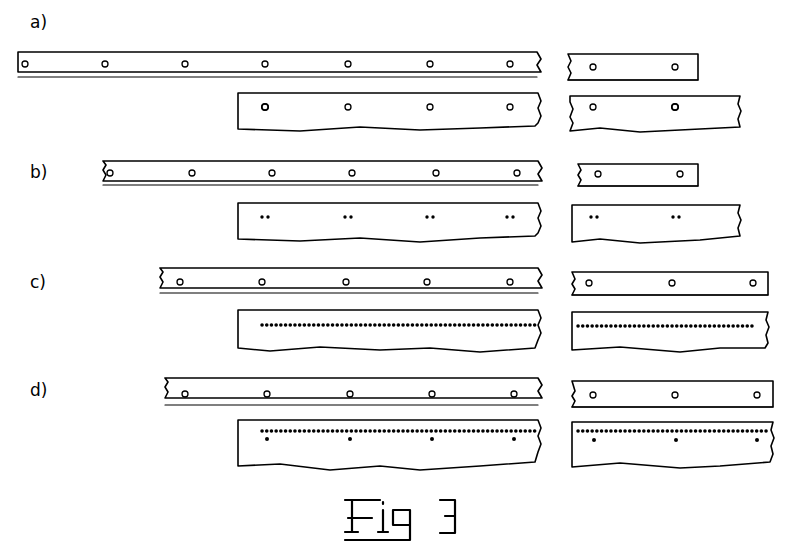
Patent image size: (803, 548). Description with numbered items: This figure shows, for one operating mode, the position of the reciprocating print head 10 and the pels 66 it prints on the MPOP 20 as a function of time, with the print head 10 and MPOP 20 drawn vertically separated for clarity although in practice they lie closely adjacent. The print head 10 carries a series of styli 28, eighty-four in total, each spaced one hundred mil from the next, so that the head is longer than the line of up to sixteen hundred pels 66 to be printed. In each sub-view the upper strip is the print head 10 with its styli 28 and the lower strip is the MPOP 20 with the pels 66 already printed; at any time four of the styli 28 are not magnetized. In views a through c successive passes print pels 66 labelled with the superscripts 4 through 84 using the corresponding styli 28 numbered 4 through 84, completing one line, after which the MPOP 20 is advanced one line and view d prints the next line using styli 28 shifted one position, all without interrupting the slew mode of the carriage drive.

The print head 10 is at (387, 170).
The MPOP 20 is at (718, 98).
The stylus 28 is at (391, 212).
The pels 66 is at (467, 273).
The index 4 is at (262, 219).
The index 84 is at (755, 330).